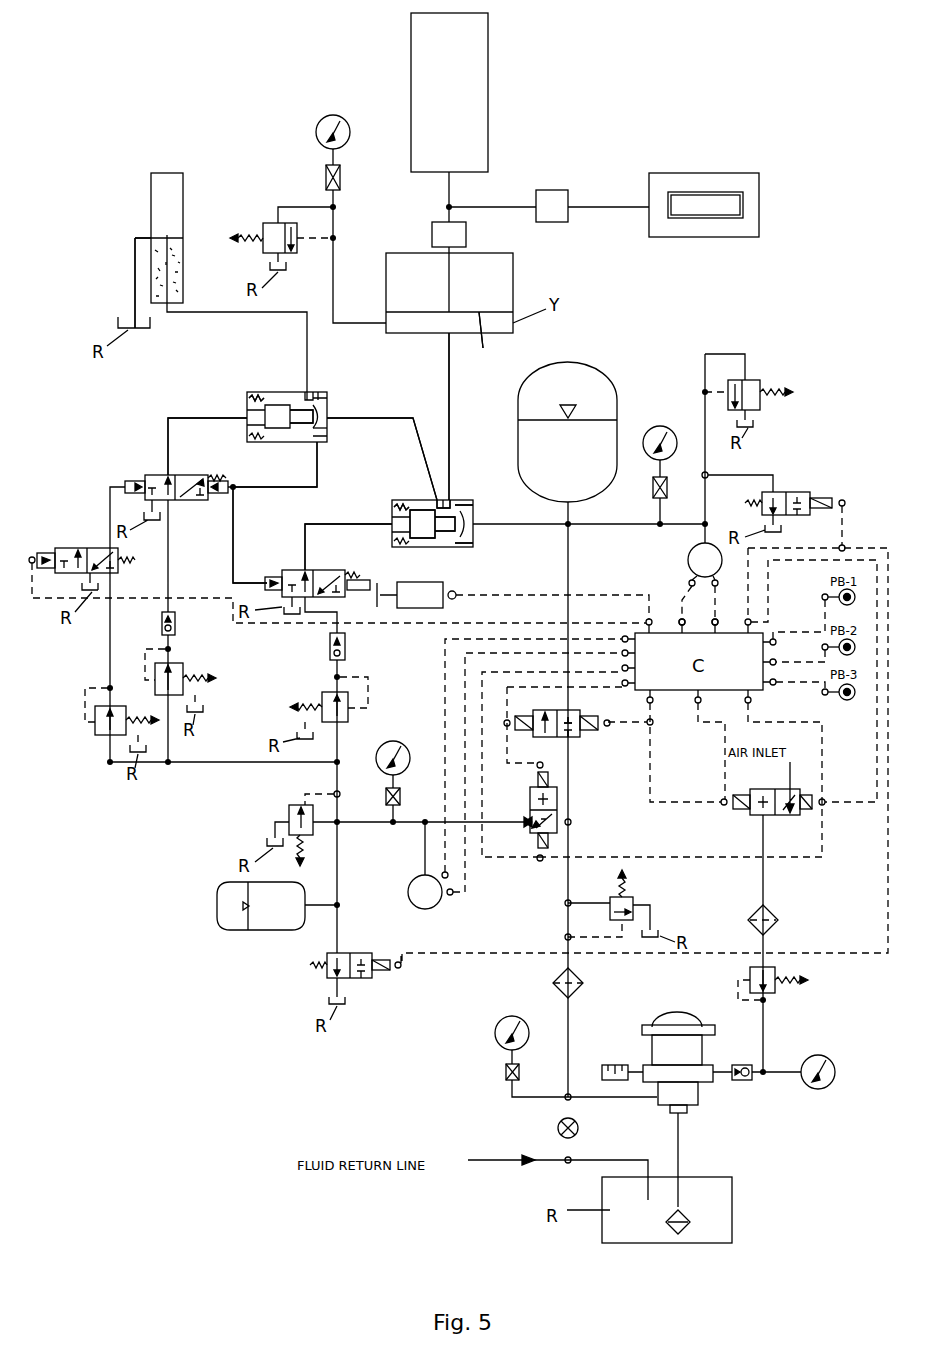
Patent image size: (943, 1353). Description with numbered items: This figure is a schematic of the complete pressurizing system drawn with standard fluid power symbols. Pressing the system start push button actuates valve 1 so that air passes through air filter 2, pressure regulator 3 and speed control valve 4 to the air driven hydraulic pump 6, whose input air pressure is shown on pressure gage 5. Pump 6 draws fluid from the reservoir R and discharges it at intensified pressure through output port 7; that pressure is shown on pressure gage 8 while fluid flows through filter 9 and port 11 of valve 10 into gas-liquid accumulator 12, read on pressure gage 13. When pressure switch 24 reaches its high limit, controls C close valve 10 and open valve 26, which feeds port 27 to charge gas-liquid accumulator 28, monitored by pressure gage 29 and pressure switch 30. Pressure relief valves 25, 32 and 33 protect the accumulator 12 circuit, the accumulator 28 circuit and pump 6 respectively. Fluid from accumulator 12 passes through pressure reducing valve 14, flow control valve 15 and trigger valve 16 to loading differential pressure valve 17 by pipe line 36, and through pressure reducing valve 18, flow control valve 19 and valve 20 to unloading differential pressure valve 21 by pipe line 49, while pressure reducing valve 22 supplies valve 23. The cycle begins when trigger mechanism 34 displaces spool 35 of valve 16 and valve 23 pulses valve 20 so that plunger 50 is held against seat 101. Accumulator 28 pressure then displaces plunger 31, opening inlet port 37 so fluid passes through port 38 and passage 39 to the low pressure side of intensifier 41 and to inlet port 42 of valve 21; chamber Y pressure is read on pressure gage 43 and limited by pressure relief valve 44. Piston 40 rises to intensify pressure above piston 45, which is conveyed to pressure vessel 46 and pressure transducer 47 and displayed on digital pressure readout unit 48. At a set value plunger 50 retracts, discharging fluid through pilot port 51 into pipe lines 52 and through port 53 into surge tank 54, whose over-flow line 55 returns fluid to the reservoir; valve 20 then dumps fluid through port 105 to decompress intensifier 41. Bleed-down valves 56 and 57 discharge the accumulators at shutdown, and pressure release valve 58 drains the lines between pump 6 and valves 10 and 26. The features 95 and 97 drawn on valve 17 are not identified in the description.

The valve 1 is at (780, 805).
The air filter 2 is at (772, 913).
The pressure regulator 3 is at (772, 988).
The speed control valve 4 is at (738, 1082).
The pressure gage 5 is at (830, 1060).
The hydraulic pump 6 is at (675, 1020).
The output port 7 is at (655, 1098).
The pressure gage 8 is at (503, 1020).
The filter 9 is at (560, 977).
The valve 10 is at (540, 828).
The port 11 is at (530, 820).
The gas-liquid accumulator 12 is at (217, 905).
The pressure gage 13 is at (393, 742).
The pressure reducing valve 14 is at (322, 700).
The flow control valve 15 is at (348, 645).
The trigger valve 16 is at (318, 570).
The loading differential pressure valve 17 is at (420, 543).
The pressure reducing valve 18 is at (183, 670).
The flow control valve 19 is at (178, 620).
The valve 20 is at (158, 478).
The unloading differential pressure valve 21 is at (287, 398).
The pressure reducing valve 22 is at (100, 730).
The valve 23 is at (95, 556).
The pressure switch 24 is at (410, 882).
The pressure relief valve 25 is at (296, 812).
The valve 26 is at (573, 725).
The port 27 is at (600, 702).
The gas-liquid accumulator 28 is at (566, 372).
The pressure gage 29 is at (656, 428).
The pressure switch 30 is at (695, 560).
The plunger 31 is at (462, 530).
The pressure relief valve 32 is at (748, 382).
The pressure relief valve 33 is at (622, 905).
The trigger mechanism 34 is at (440, 590).
The spool 35 is at (357, 590).
The pipe line 36 is at (326, 524).
The inlet port 37 is at (480, 526).
The port 38 is at (452, 503).
The passage 39 is at (450, 422).
The piston 40 is at (484, 341).
The intensifier 41 is at (513, 286).
The inlet port 42 is at (330, 418).
The pressure gage 43 is at (327, 118).
The pressure relief valve 44 is at (275, 233).
The piston 45 is at (440, 245).
The pressure vessel 46 is at (478, 88).
The pressure transducer 47 is at (552, 200).
The digital pressure readout unit 48 is at (705, 181).
The pipe line 49 is at (206, 415).
The plunger 50 is at (310, 423).
The pilot port 51 is at (318, 443).
The pipe lines 52 is at (270, 488).
The port 53 is at (314, 393).
The surge tank 54 is at (168, 185).
The over-flow line 55 is at (135, 278).
The bleed-down valve 56 is at (790, 495).
The bleed-down valve 57 is at (355, 960).
The pressure release valve 58 is at (557, 1128).
The spring 95 is at (392, 522).
The port 97 is at (437, 500).
The seat 101 is at (322, 393).
The port 105 is at (248, 418).